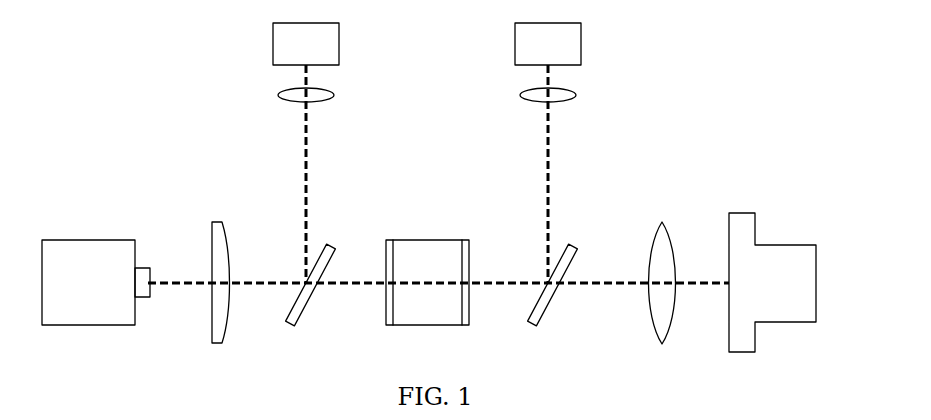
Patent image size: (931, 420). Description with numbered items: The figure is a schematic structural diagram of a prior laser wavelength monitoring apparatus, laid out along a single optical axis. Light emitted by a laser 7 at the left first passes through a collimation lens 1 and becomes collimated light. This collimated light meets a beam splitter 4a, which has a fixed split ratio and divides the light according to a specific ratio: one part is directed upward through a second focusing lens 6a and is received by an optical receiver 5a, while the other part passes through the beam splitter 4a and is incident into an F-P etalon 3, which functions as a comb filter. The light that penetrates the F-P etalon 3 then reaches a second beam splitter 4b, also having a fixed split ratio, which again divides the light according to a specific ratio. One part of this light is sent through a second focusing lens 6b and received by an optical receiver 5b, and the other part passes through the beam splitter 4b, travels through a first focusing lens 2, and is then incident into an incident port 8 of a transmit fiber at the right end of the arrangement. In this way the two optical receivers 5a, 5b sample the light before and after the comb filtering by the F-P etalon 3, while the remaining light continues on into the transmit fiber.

The laser 7 is at (81, 240).
The collimation lens 1 is at (215, 220).
The beam splitter 4a is at (329, 243).
The F-P etalon 3 is at (420, 240).
The beam splitter 4b is at (571, 243).
The first focusing lens 2 is at (668, 236).
The incident port of a transmit fiber 8 is at (778, 245).
The optical receiver 5a is at (339, 40).
The second focusing lens 6a is at (318, 91).
The optical receiver 5b is at (581, 40).
The second focusing lens 6b is at (560, 91).